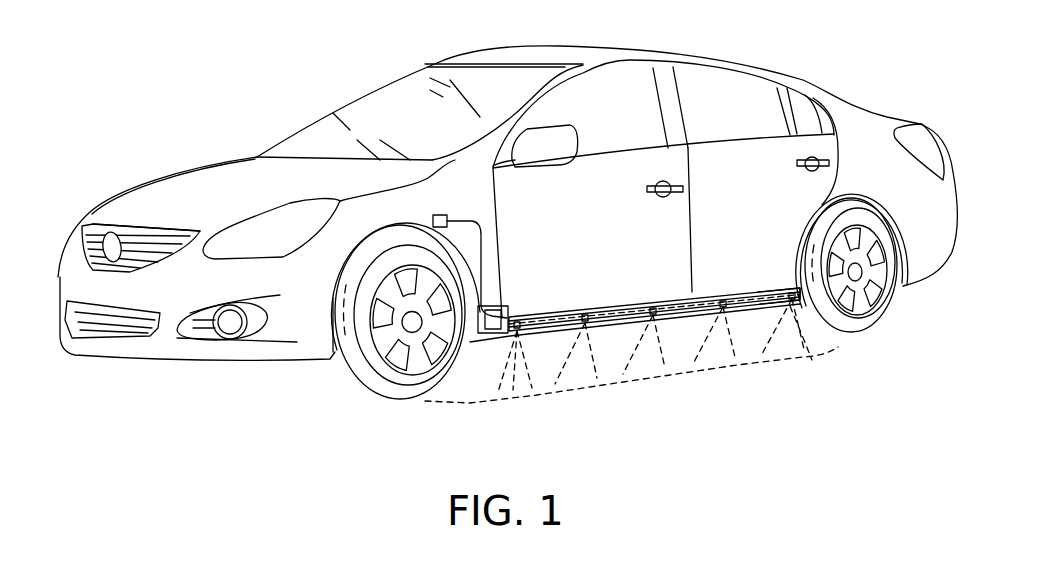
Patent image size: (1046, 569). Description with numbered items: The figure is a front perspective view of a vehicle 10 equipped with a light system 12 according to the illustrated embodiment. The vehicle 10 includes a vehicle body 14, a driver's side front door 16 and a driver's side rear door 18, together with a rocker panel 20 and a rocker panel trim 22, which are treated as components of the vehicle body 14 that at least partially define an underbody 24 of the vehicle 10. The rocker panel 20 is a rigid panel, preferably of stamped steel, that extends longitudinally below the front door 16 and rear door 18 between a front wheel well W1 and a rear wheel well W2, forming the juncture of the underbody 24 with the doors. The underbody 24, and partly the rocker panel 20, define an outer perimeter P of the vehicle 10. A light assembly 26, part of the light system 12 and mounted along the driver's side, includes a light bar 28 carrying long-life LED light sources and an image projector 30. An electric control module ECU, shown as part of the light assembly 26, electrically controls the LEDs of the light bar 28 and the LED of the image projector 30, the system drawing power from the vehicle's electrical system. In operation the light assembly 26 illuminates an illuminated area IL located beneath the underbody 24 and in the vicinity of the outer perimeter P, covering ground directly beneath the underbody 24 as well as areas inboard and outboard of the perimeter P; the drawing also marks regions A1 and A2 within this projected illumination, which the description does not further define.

The vehicle 10 is at (330, 30).
The light system 12 is at (722, 266).
The vehicle body 14 is at (218, 157).
The front door 16 is at (625, 153).
The rear door 18 is at (738, 138).
The rocker panel 20 is at (604, 292).
The rocker panel trim 22 is at (474, 342).
The underbody 24 is at (656, 332).
The light assembly 26 is at (658, 282).
The light bar 28 is at (767, 293).
The image projector 30 is at (513, 318).
The electric control module ECU is at (436, 215).
The front wheel well W1 is at (337, 377).
The rear wheel well W2 is at (883, 307).
The rear illuminated area A1 is at (765, 388).
The front illuminated area A2 is at (524, 416).
The illuminated area IL is at (605, 390).
The outer perimeter P is at (812, 358).